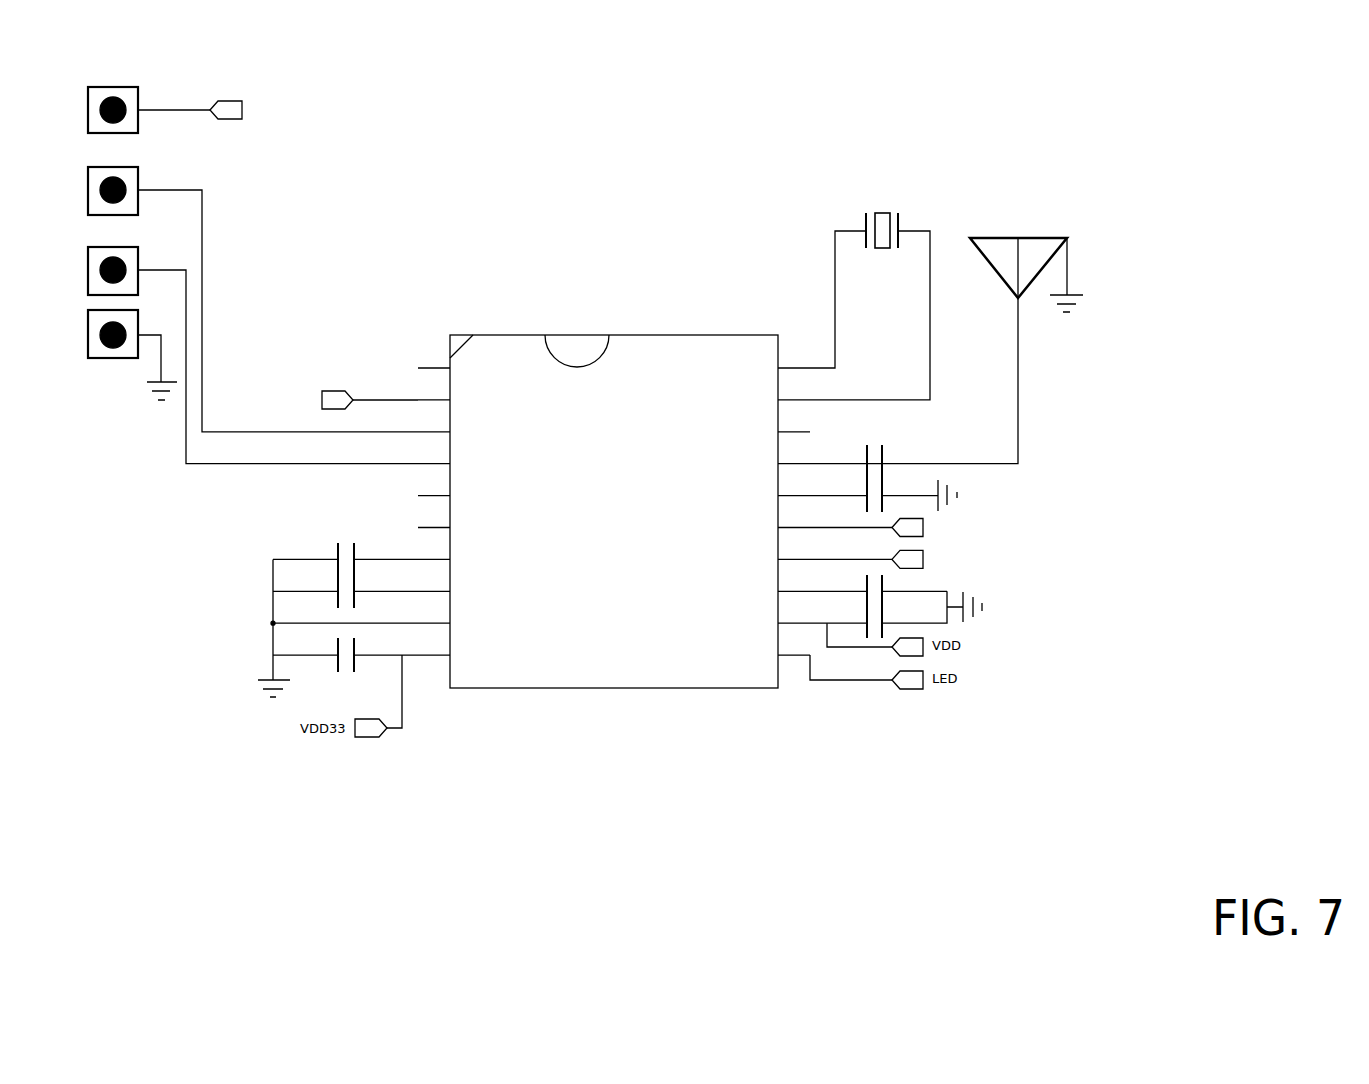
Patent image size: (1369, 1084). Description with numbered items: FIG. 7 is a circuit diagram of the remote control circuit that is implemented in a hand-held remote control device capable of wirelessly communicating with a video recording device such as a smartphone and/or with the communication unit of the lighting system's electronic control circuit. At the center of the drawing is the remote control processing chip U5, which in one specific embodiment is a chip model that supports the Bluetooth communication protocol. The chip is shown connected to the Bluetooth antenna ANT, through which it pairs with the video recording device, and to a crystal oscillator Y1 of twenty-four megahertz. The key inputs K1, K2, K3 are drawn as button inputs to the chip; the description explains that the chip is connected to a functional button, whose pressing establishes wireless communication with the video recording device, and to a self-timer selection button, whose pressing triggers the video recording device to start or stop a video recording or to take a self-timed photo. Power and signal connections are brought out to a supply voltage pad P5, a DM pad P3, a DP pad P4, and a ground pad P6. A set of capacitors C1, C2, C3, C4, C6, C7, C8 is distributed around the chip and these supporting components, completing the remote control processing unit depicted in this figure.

The remote control processing chip U5 is at (614, 510).
The VDD pad P5 is at (184, 98).
The DM pad P3 is at (253, 287).
The DP pad P4 is at (253, 343).
The ground pad P6 is at (117, 353).
The key input K3 is at (356, 400).
The capacitor C1 is at (345, 654).
The capacitor C2 is at (345, 582).
The capacitor C3 is at (345, 574).
The capacitor C4 is at (883, 494).
The capacitor C6 is at (881, 478).
The capacitor C7 is at (878, 606).
The capacitor C8 is at (896, 607).
The key input K1 is at (879, 528).
The key input K2 is at (879, 559).
The crystal oscillator Y1 24MHz Y1 is at (870, 295).
The Bluetooth antenna BT_TNT ANT-6F1 ANT is at (946, 351).